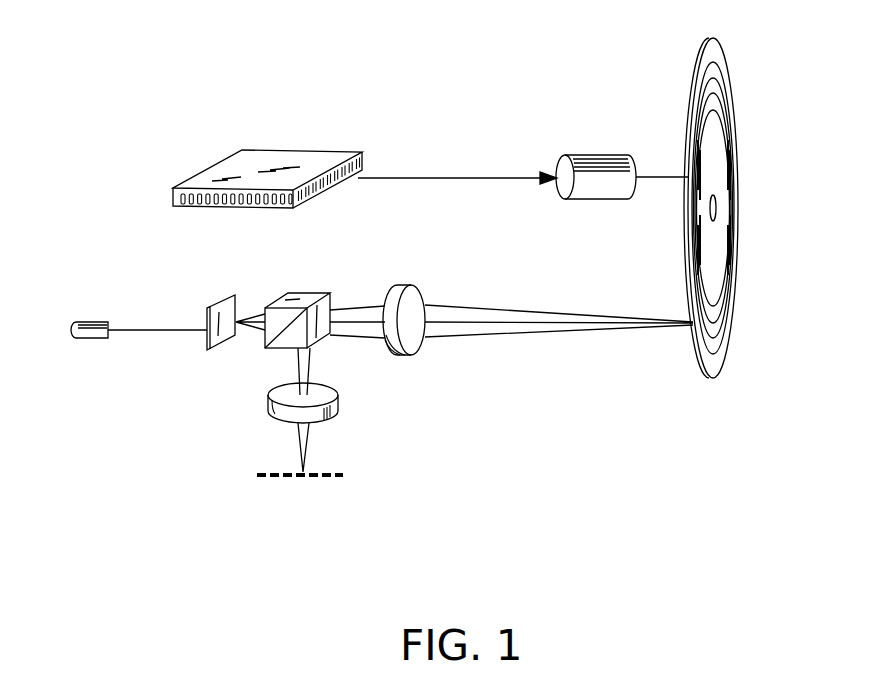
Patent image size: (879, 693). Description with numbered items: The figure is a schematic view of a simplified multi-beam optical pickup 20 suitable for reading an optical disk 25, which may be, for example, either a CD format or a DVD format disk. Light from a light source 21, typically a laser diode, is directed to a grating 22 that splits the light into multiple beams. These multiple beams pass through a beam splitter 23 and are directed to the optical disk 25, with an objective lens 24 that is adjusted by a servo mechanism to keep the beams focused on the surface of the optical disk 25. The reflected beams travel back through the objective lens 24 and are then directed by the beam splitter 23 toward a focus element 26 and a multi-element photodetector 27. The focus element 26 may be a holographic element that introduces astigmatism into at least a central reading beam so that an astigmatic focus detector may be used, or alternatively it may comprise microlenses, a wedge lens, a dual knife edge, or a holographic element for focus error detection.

The optical pickup 20 is at (202, 124).
The light source 21 is at (73, 327).
The grating 22 is at (232, 296).
The beam splitter 23 is at (313, 296).
The objective lens 24 is at (397, 289).
The optical disk 25 is at (732, 88).
The focus element 26 is at (339, 400).
The multi-element photodetector 27 is at (346, 477).